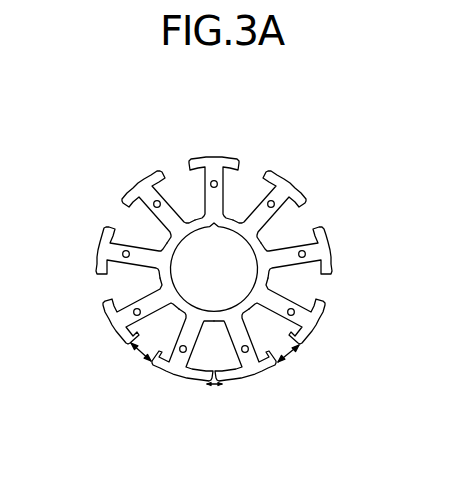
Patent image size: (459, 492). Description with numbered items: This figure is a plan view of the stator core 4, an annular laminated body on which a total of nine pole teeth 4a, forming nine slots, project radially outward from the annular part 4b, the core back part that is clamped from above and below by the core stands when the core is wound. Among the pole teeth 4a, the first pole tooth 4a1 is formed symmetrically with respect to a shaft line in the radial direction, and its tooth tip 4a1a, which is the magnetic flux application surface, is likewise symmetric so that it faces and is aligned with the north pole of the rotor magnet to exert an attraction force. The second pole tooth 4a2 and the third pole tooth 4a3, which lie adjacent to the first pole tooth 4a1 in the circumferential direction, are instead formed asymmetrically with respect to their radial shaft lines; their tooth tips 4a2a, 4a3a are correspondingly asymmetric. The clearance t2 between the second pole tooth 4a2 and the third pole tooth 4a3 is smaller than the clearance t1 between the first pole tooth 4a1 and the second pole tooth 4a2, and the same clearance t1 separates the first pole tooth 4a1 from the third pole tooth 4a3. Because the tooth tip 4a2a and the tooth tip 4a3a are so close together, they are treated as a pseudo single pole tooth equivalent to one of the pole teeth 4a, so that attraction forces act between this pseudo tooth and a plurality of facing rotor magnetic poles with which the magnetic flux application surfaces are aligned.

The stator core 4 is at (136, 179).
The pole teeth 4a is at (416, 233).
The first pole tooth 4a1 is at (207, 176).
The second pole tooth 4a2 is at (279, 196).
The third pole tooth 4a3 is at (318, 250).
The tooth tip 4a1a is at (117, 329).
The tooth tip 4a2a is at (259, 378).
The tooth tip 4a3a is at (174, 378).
The annular part 4b is at (160, 277).
The clearance t1 is at (131, 350).
The clearance t2 is at (217, 387).